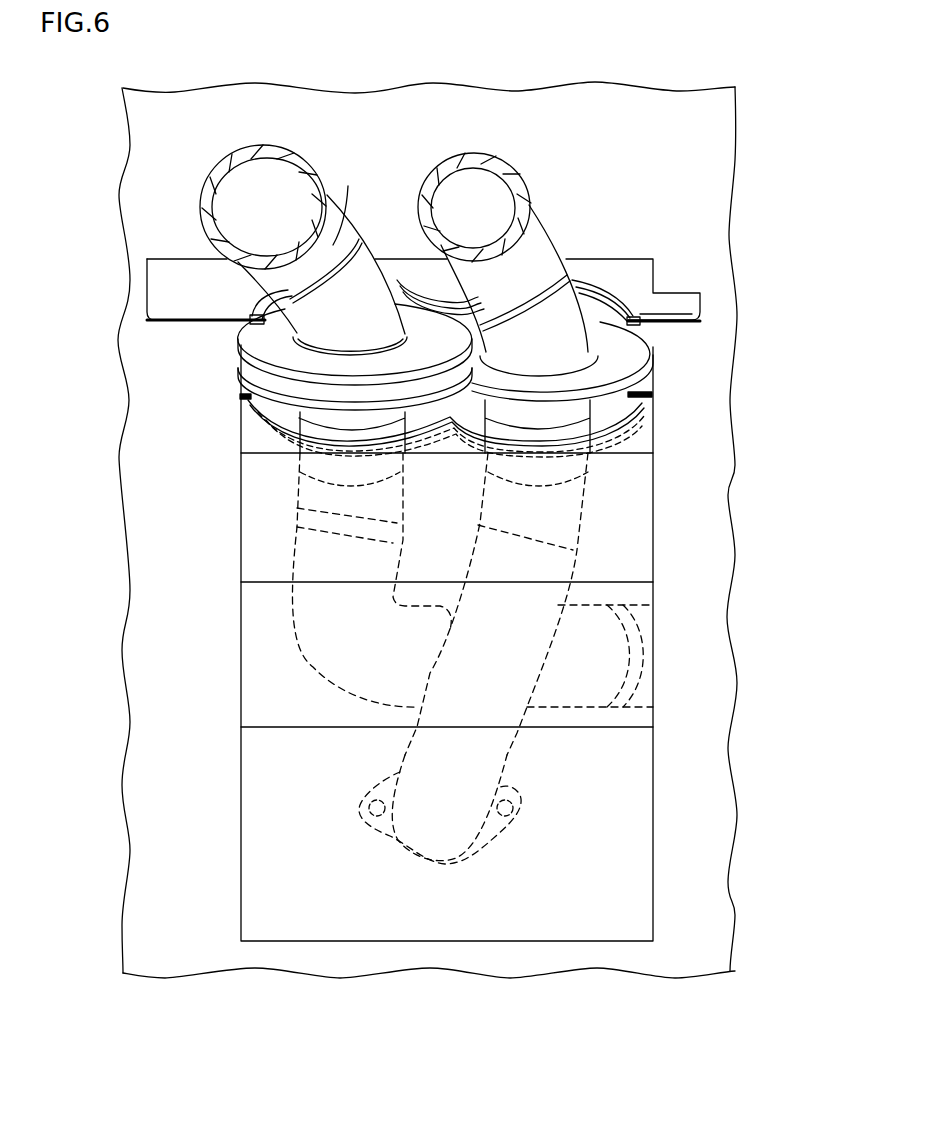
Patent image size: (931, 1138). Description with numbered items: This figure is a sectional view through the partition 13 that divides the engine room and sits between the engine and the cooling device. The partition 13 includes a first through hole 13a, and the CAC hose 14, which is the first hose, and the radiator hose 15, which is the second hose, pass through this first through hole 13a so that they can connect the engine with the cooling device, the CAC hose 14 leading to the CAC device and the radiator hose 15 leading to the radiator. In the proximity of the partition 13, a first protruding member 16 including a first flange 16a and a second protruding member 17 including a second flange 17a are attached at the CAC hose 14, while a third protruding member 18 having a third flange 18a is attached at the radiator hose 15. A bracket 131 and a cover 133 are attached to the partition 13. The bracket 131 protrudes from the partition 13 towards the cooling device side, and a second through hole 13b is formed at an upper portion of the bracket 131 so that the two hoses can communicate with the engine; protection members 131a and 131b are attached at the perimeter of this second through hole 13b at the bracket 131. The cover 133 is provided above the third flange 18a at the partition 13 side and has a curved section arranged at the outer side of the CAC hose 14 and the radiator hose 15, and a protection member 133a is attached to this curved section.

The partition 13 is at (622, 135).
The first through hole 13a is at (443, 537).
The second through hole 13b is at (446, 437).
The CAC hose 14 is at (349, 245).
The radiator hose 15 is at (548, 245).
The first protruding member 16 is at (240, 342).
The first flange 16a is at (253, 327).
The second protruding member 17 is at (240, 380).
The second flange 17a is at (240, 365).
The third protruding member 18 is at (622, 343).
The third flange 18a is at (612, 338).
The bracket 131 is at (625, 475).
The protection member 131a is at (653, 403).
The protection member 131b is at (650, 378).
The cover 133 is at (627, 273).
The protection member 133a is at (630, 312).